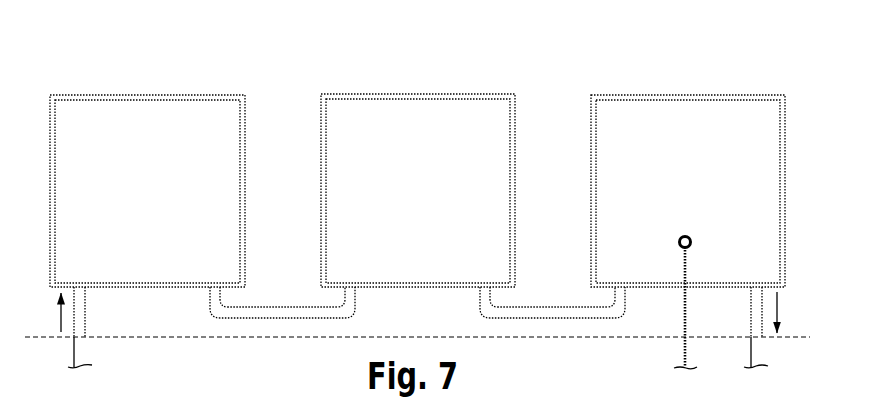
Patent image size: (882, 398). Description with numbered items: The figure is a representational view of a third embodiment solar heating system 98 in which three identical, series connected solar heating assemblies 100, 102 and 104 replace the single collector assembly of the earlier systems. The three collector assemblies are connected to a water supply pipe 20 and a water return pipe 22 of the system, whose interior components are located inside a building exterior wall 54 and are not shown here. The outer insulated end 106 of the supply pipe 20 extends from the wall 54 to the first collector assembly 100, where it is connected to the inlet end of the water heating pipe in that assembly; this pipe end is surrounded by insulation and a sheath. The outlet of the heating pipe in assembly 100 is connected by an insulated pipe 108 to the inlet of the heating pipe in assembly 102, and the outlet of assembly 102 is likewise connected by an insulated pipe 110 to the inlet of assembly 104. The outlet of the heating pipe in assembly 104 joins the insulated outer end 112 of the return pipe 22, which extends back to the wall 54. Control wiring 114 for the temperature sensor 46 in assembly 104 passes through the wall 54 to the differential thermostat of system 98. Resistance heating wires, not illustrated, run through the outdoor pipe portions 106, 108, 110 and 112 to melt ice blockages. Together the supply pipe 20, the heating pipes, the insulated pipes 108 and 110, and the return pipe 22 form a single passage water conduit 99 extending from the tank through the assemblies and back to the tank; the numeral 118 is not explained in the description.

The third embodiment solar heating system 98 is at (816, 60).
The solar heating assembly 100 is at (146, 93).
The solar heating assembly 102 is at (381, 93).
The solar heating assembly 104 is at (643, 93).
The outer insulated end of pipe 20 106 is at (87, 296).
The insulated pipe 108 is at (298, 307).
The insulated pipe 110 is at (565, 307).
The insulated outer end of pipe 22 112 is at (750, 298).
The control wiring 114 is at (684, 327).
The temperature sensor 46 is at (690, 232).
The single passage water conduit 99 is at (87, 323).
The water supply pipe 20 is at (87, 352).
The water return pipe 22 is at (763, 352).
The building exterior wall 54 is at (800, 337).
The base 118 is at (836, 388).